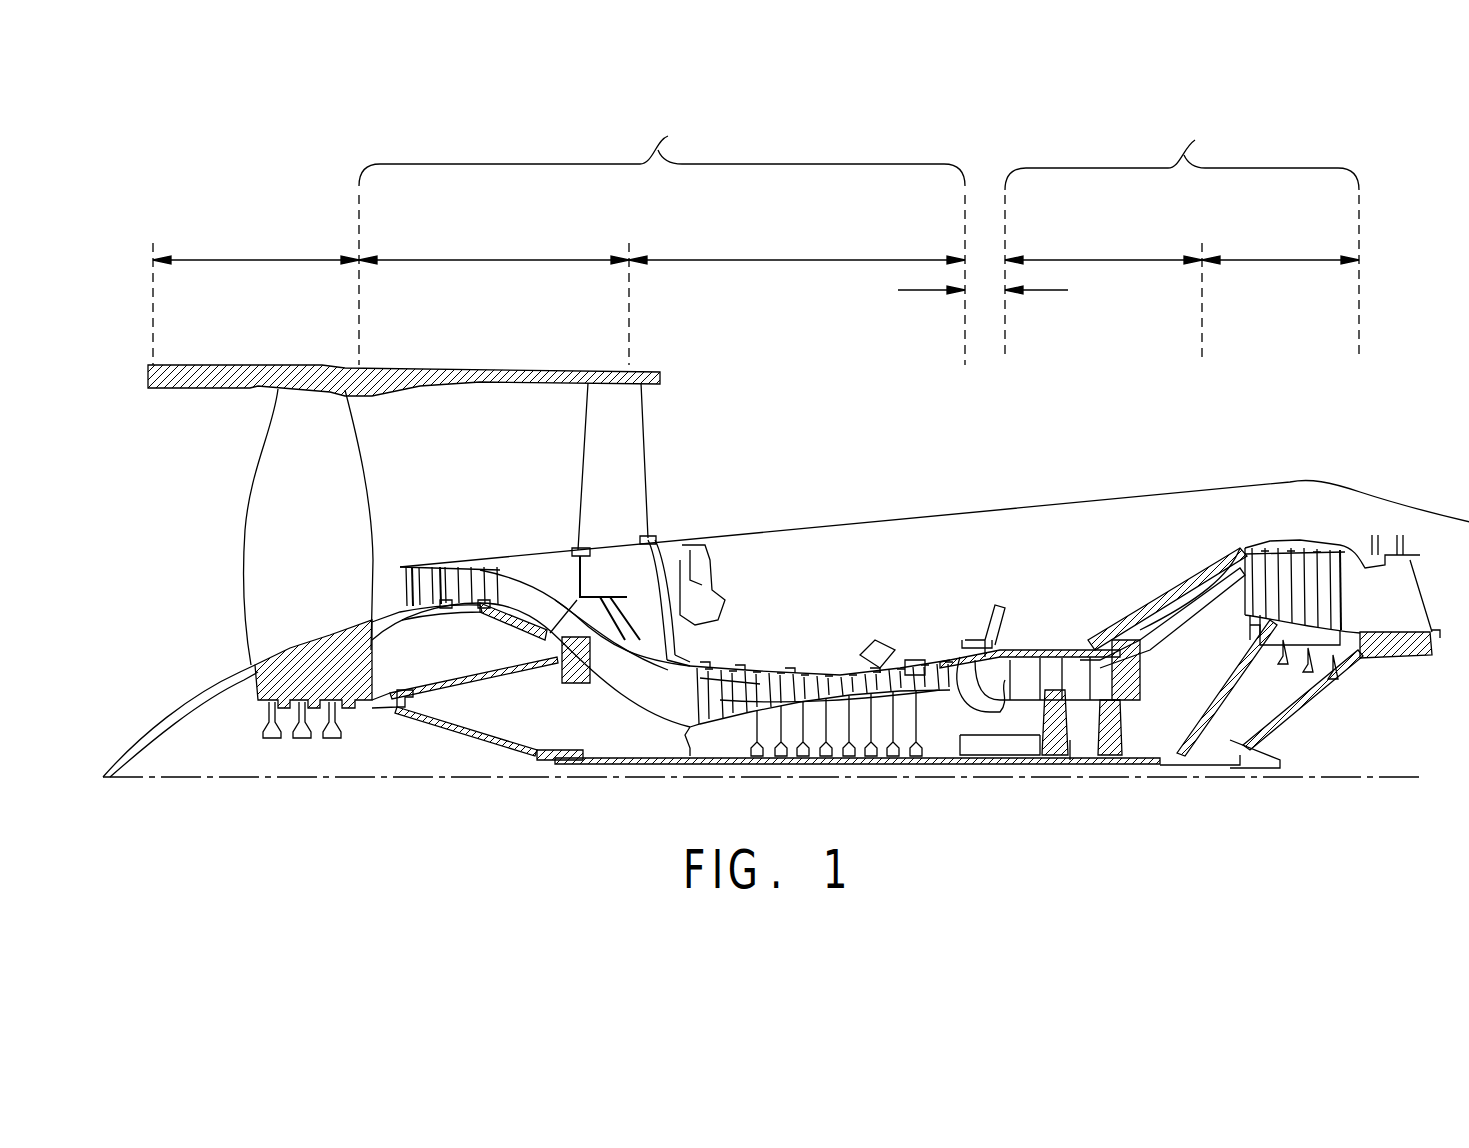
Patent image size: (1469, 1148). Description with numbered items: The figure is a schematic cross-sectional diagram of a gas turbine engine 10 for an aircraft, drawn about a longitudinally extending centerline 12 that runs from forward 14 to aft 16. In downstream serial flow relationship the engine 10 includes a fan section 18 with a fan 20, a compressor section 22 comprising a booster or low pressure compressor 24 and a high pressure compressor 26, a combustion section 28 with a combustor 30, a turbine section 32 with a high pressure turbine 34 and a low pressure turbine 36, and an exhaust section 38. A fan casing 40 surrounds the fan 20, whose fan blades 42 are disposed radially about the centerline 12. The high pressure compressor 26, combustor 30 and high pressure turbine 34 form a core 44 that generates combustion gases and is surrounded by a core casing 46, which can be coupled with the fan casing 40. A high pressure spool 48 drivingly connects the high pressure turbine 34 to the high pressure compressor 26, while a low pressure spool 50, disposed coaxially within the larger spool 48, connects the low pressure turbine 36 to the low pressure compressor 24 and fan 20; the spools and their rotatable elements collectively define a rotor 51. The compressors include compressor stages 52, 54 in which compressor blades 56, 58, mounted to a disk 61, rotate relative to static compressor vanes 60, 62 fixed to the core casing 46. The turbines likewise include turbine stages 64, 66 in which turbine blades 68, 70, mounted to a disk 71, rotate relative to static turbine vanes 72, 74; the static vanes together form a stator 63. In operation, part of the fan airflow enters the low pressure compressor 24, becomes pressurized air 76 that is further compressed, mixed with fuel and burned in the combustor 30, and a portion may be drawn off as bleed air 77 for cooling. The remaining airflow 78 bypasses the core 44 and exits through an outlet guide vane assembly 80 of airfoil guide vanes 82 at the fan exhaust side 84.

The gas turbine engine 10 is at (1374, 288).
The centerline 12 is at (233, 779).
The forward 14 is at (190, 504).
The aft 16 is at (1466, 601).
The fan section 18 is at (257, 260).
The fan 20 is at (232, 626).
The compressor section 22 is at (662, 146).
The low pressure compressor 24 is at (503, 260).
The high pressure compressor 26 is at (800, 260).
The combustion section 28 is at (910, 290).
The combustor 30 is at (1003, 667).
The turbine section 32 is at (1182, 148).
The high pressure turbine 34 is at (1104, 260).
The low pressure turbine 36 is at (1283, 260).
The exhaust section 38 is at (1426, 573).
The fan casing 40 is at (392, 367).
The fan blades 42 is at (328, 436).
The core 44 is at (925, 548).
The core casing 46 is at (1186, 590).
The HP spool 48 is at (970, 735).
The LP spool 50 is at (560, 762).
The rotor 51 is at (822, 770).
The compressor stages 52 is at (480, 511).
The compressor stages 54 is at (792, 665).
The compressor blades 56 is at (435, 568).
The compressor blades 58 is at (728, 680).
The static compressor vanes 60 is at (413, 568).
The disk 61 is at (453, 607).
The static compressor vanes 62 is at (697, 660).
The stator 63 is at (1262, 540).
The turbine stages 64 is at (1010, 608).
The turbine stages 66 is at (1283, 482).
The turbine blades 68 is at (1065, 698).
The turbine blades 70 is at (1344, 552).
The disk 71 is at (1256, 624).
The static turbine vanes 72 is at (1053, 667).
The static turbine vanes 74 is at (1325, 553).
The pressurized air 76 is at (640, 672).
The bleed air 77 is at (790, 740).
The bypass airflow 78 is at (688, 441).
The outlet guide vane assembly 80 is at (662, 496).
The airfoil guide vanes 82 is at (590, 478).
The fan exhaust side 84 is at (672, 404).